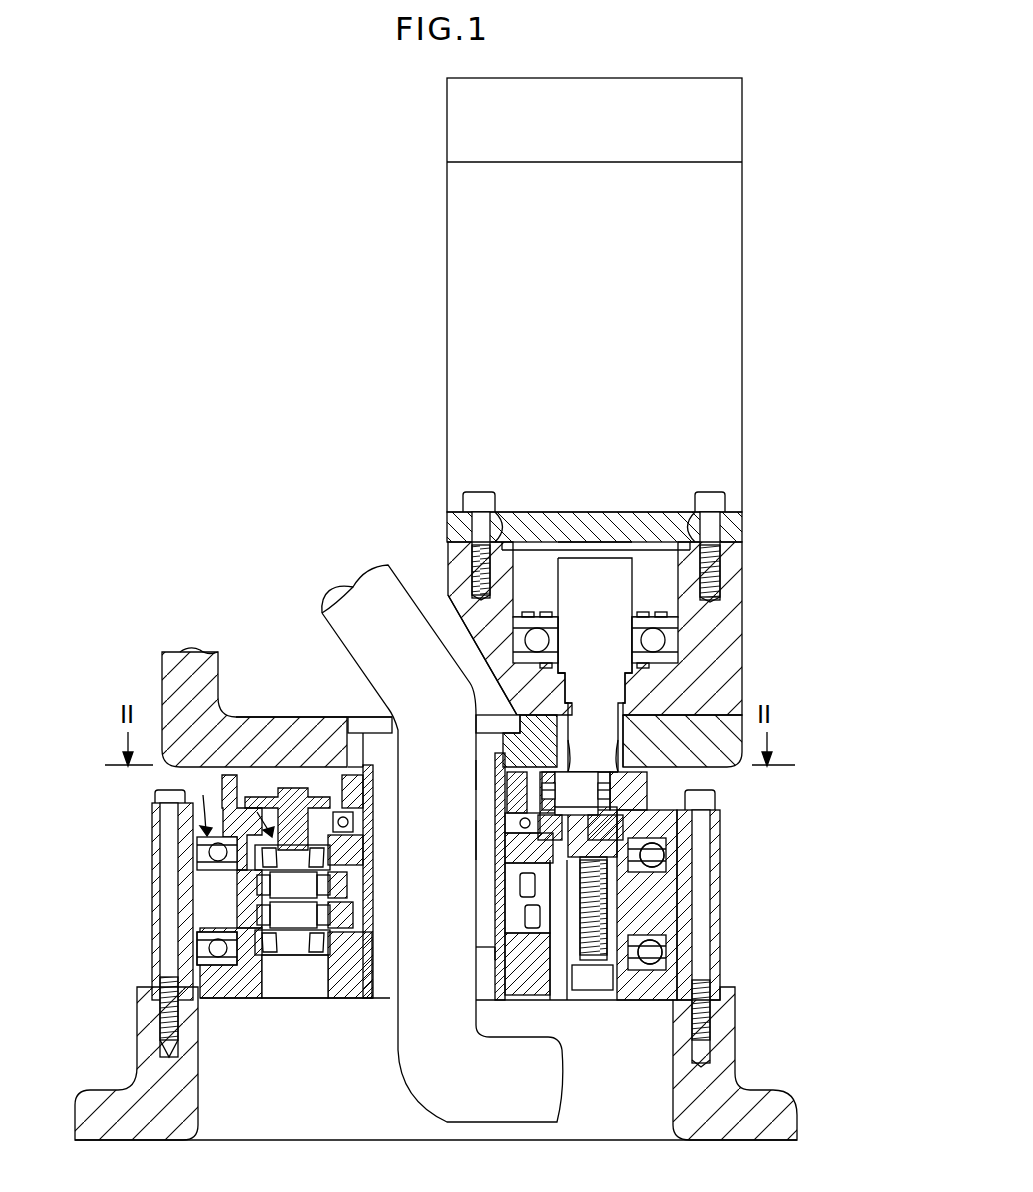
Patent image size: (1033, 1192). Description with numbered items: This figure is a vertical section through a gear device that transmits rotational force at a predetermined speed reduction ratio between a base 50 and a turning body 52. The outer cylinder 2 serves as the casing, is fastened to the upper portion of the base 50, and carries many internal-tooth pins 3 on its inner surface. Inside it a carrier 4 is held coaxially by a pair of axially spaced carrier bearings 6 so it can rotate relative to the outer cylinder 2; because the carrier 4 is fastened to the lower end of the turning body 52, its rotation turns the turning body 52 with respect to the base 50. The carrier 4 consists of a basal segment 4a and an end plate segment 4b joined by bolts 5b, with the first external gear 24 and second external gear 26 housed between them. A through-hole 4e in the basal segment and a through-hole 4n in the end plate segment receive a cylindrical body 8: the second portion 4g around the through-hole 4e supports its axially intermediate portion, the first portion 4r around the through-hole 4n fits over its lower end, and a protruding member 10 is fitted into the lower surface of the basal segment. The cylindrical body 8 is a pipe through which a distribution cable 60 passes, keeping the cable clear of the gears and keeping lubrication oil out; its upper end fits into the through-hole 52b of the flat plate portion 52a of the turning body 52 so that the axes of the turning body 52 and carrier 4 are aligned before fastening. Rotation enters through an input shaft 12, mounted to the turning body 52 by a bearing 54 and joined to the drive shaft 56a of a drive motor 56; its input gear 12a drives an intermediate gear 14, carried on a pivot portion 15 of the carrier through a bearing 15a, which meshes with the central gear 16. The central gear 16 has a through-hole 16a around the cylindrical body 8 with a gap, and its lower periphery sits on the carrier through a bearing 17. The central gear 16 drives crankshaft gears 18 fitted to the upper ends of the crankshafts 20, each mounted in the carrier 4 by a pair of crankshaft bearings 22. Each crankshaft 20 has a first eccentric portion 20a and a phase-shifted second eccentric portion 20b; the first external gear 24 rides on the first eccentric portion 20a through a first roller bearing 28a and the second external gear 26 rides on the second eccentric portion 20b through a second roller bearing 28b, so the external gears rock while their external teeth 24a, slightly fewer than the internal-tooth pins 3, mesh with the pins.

The outer cylinder 2 is at (722, 897).
The internal-tooth pin 3 is at (677, 868).
The carrier 4 is at (805, 915).
The basal segment 4a is at (655, 910).
The end plate segment 4b is at (672, 953).
The through-hole 4e is at (475, 770).
The second portion 4g is at (476, 843).
The through-hole 4n is at (480, 1030).
The first portion 4r is at (507, 940).
The bolt 5b is at (595, 957).
The carrier bearing 6 is at (200, 825).
The cylindrical body 8 is at (350, 765).
The protruding member 10 is at (375, 867).
The input shaft 12 is at (690, 672).
The input gear 12a is at (655, 717).
The intermediate gear 14 is at (600, 792).
The pivot portion 15 is at (640, 828).
The bearing 15a is at (577, 812).
The central gear 16 is at (343, 713).
The through-hole 16a is at (557, 723).
The bearing 17 is at (290, 790).
The crankshaft gear 18 is at (232, 710).
The crankshaft 20 is at (248, 790).
The first eccentric portion 20a is at (208, 858).
The second eccentric portion 20b is at (215, 960).
The crankshaft bearing 22 is at (245, 1062).
The first external gear 24 is at (262, 897).
The external teeth 24a is at (222, 895).
The second external gear 26 is at (290, 923).
The first roller bearing 28a is at (258, 882).
The second roller bearing 28b is at (268, 935).
The base 50 is at (137, 1058).
The turning body 52 is at (752, 572).
The flat plate portion 52a is at (292, 715).
The through-hole 52b is at (473, 690).
The bearing 54 is at (670, 640).
The drive motor 56 is at (742, 360).
The drive shaft 56a is at (633, 553).
The distribution cable 60 is at (400, 1072).